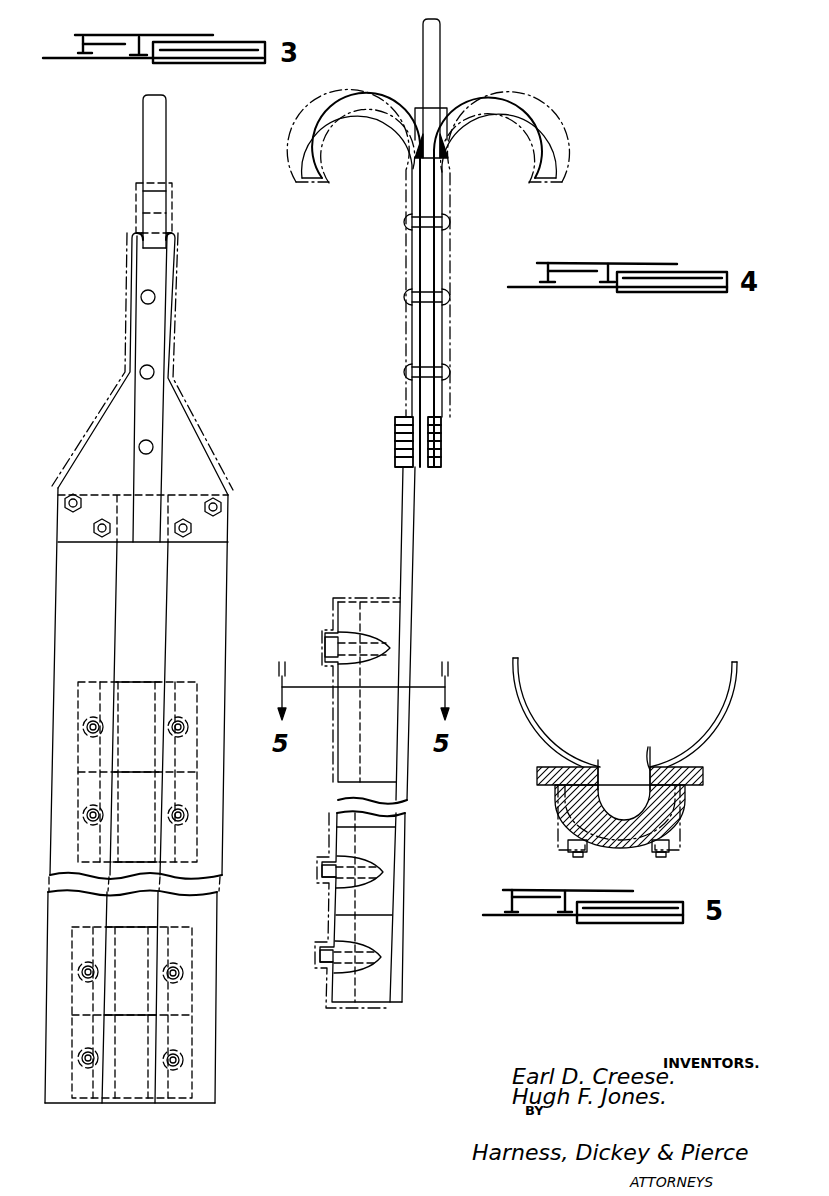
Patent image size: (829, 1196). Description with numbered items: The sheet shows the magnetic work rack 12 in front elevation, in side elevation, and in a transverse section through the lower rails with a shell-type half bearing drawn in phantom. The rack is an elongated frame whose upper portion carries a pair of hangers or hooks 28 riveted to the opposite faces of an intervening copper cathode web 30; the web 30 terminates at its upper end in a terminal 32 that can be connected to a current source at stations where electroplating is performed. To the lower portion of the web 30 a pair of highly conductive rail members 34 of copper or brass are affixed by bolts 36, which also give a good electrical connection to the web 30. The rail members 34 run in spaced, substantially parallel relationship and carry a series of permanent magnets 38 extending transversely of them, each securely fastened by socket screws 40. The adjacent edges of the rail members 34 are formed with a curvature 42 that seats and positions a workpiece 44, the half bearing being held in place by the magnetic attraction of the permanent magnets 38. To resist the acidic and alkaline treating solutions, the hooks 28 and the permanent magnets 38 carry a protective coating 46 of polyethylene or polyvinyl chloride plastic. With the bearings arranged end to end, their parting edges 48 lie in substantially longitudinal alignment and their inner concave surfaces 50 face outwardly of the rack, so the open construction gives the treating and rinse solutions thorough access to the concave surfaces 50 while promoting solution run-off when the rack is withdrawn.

In FIG. 3, the work rack 12 is at (243, 575).
In FIG. 3, the hooks 28 is at (157, 247).
In FIG. 4, the hooks 28 is at (307, 147).
In FIG. 3, the copper cathode web 30 is at (178, 450).
In FIG. 4, the copper cathode web 30 is at (425, 402).
In FIG. 3, the terminal 32 is at (157, 120).
In FIG. 4, the terminal 32 is at (438, 47).
In FIG. 3, the rail members 34 is at (187, 613).
In FIG. 4, the rail members 34 is at (410, 550).
In FIG. 5, the rail members 34 is at (537, 772).
In FIG. 3, the bolts 36 is at (221, 512).
In FIG. 4, the bolts 36 is at (441, 437).
In FIG. 3, the permanent magnets 38 is at (130, 1093).
In FIG. 4, the permanent magnets 38 is at (348, 770).
In FIG. 5, the permanent magnets 38 is at (617, 848).
In FIG. 3, the socket screws 40 is at (173, 1062).
In FIG. 4, the socket screws 40 is at (325, 880).
In FIG. 5, the socket screws 40 is at (667, 857).
In FIG. 5, the curvature 42 is at (610, 777).
In FIG. 5, the workpiece 44 is at (537, 713).
In FIG. 3, the protective coating 46 is at (173, 352).
In FIG. 4, the protective coating 46 is at (538, 210).
In FIG. 5, the protective coating 46 is at (686, 810).
In FIG. 5, the parting edges 48 is at (513, 657).
In FIG. 5, the concave surfaces 50 is at (683, 750).